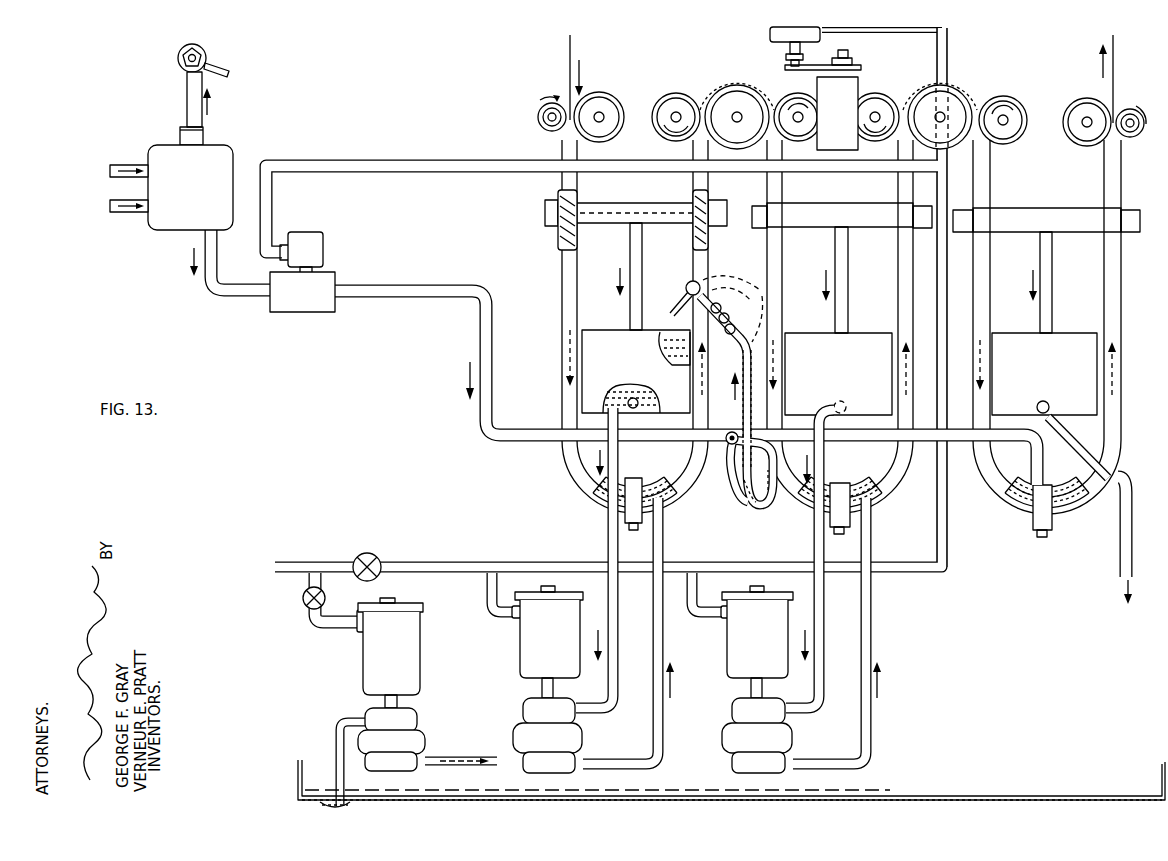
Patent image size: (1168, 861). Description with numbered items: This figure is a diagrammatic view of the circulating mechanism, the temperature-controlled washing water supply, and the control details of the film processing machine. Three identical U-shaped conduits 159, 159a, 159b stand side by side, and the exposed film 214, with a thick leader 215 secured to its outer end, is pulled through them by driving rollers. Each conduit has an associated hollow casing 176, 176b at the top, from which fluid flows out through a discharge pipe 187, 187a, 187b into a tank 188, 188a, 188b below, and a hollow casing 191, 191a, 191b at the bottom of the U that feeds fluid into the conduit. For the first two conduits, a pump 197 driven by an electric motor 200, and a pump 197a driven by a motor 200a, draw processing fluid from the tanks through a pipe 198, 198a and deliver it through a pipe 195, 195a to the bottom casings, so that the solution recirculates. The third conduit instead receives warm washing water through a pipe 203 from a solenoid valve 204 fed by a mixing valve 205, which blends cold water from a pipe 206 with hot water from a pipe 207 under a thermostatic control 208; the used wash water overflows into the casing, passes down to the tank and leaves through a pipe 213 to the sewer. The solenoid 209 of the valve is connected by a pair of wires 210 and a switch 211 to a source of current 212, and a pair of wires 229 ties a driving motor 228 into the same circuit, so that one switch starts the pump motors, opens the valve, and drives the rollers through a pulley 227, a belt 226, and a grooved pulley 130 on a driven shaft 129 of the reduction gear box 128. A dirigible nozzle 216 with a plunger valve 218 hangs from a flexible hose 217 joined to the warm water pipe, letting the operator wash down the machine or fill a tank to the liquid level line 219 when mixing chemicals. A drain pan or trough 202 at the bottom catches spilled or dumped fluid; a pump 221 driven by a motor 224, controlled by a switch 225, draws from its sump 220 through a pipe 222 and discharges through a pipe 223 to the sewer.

The reduction gear box 128 is at (858, 86).
The driven shaft 129 is at (850, 53).
The grooved pulley 130 is at (860, 67).
The U-shaped conduit 159 is at (562, 318).
The second U-shaped conduit 159a is at (776, 506).
The third U-shaped conduit 159b is at (992, 490).
The hollow casing 176 is at (602, 228).
The hollow casing 176b is at (810, 230).
The short pipe 187 is at (642, 250).
The discharge pipe 187a is at (848, 276).
The discharge pipe 187b is at (1052, 284).
The tank 188 is at (590, 342).
The tank 188a is at (866, 342).
The tank 188b is at (1068, 342).
The hollow casing 191 is at (634, 490).
The hollow casing 191a is at (840, 492).
The hollow casing 191b is at (1052, 495).
The fitting or pipe 195 is at (664, 722).
The pipe 195a is at (871, 722).
The pump 197 is at (576, 745).
The pump 197a is at (786, 745).
The pipe 198 is at (609, 680).
The pipe 198a is at (815, 680).
The electric motor 200 is at (519, 662).
The motor 200a is at (726, 662).
The drain pan or trough 202 is at (1010, 774).
The pipe 203 is at (356, 298).
The solenoid valve 204 is at (332, 284).
The mixing valve 205 is at (231, 159).
The pipe 206 is at (122, 218).
The pipe 207 is at (114, 162).
The thermostatic control 208 is at (203, 114).
The solenoid 209 is at (323, 249).
The wires 210 is at (392, 184).
The switch 211 is at (378, 558).
The source of current 212 is at (266, 559).
The pipe 213 is at (1127, 484).
The exposed film 214 is at (662, 506).
The thick leader 215 is at (1110, 41).
The dirigible nozzle 216 is at (700, 284).
The flexible hose 217 is at (745, 370).
The plunger valve 218 is at (682, 312).
The liquid level line 219 is at (666, 348).
The sump 220 is at (310, 808).
The pump 221 is at (422, 736).
The pipe 222 is at (336, 735).
The pipe 223 is at (449, 759).
The motor 224 is at (407, 653).
The switch 225 is at (303, 604).
The belt 226 is at (800, 93).
The pulley 227 is at (760, 72).
The driving motor 228 is at (768, 34).
The wires 229 is at (950, 50).